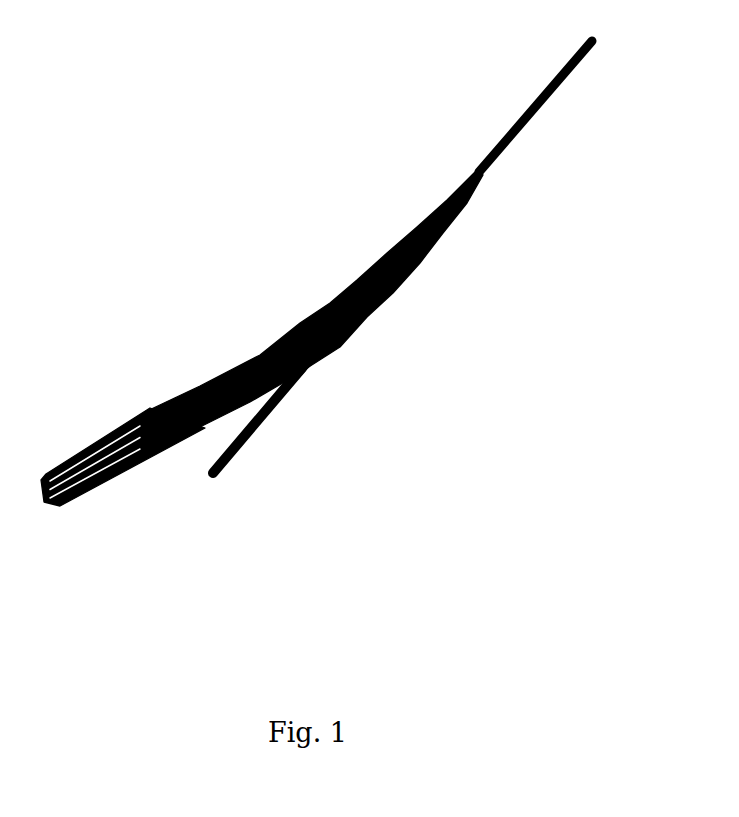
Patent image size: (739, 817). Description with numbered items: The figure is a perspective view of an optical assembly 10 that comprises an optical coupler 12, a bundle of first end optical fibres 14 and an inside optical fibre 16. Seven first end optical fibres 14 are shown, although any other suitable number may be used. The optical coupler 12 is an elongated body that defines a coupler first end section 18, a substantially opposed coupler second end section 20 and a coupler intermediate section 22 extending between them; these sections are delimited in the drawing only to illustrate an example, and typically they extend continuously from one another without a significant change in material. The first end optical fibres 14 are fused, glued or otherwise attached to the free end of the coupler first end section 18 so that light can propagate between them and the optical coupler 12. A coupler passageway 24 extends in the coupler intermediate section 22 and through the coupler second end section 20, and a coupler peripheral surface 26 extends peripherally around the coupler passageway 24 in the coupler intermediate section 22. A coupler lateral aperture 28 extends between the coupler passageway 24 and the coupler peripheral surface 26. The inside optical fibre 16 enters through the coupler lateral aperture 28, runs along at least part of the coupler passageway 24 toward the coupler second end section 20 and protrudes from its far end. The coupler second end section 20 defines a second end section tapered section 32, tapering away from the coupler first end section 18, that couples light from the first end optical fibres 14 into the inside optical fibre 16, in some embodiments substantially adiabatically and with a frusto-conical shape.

The optical assembly 10 is at (608, 360).
The optical coupler 12 is at (433, 266).
The first end optical fibre 14 is at (87, 460).
The inside optical fibre 16 is at (270, 412).
The coupler first end section 18 is at (146, 418).
The coupler second end section 20 is at (358, 266).
The coupler intermediate section 22 is at (291, 331).
The coupler passageway 24 is at (333, 347).
The coupler peripheral surface 26 is at (293, 323).
The coupler lateral aperture 28 is at (365, 323).
The second end section tapered section 32 is at (357, 203).